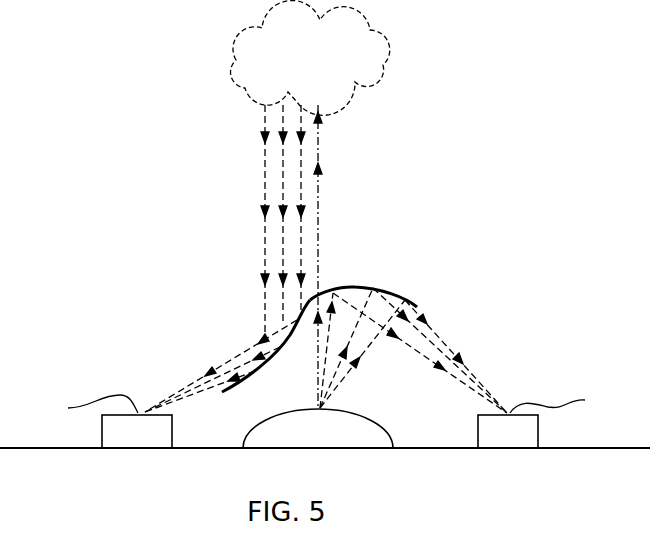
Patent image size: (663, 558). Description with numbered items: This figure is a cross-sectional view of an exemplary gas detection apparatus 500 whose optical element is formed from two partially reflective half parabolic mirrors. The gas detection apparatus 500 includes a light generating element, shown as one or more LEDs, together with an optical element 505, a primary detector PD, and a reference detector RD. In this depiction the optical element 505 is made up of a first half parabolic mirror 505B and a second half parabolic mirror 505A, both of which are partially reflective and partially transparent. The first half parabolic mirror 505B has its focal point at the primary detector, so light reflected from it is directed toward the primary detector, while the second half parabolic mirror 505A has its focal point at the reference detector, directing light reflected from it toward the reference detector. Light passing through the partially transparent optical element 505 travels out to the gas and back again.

The gas detection apparatus 500 is at (200, 147).
The optical element 505 is at (333, 349).
The second half parabolic mirror 505A is at (345, 286).
The first half parabolic mirror 505B is at (246, 384).